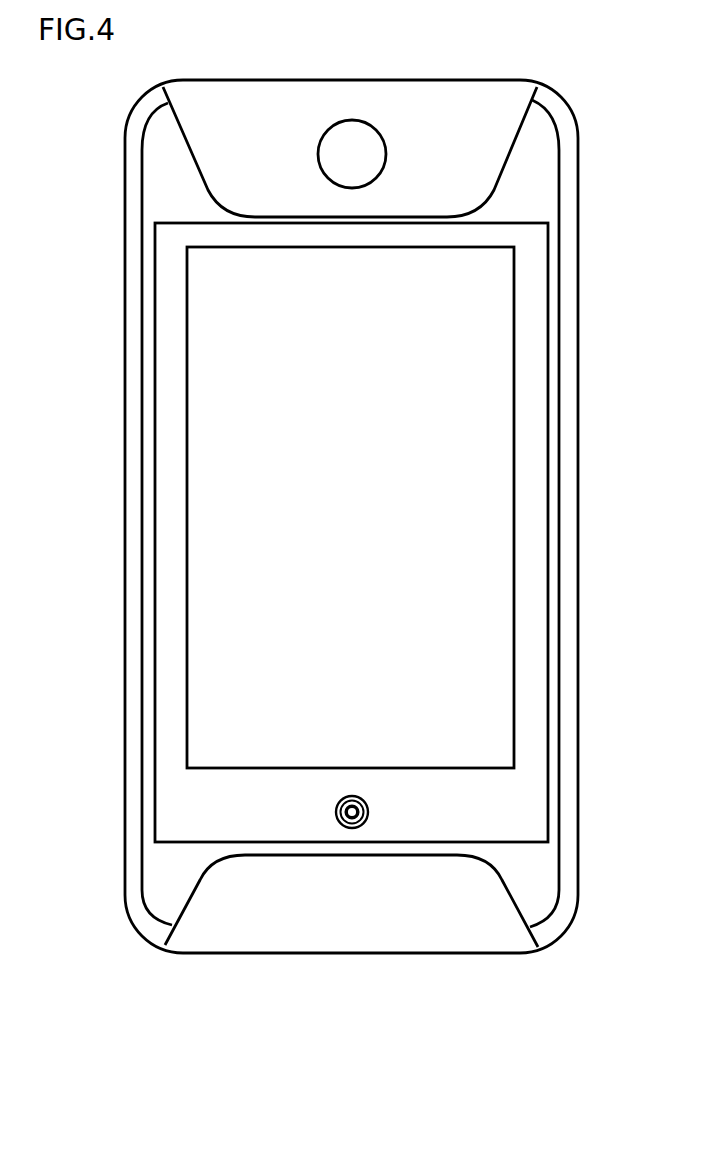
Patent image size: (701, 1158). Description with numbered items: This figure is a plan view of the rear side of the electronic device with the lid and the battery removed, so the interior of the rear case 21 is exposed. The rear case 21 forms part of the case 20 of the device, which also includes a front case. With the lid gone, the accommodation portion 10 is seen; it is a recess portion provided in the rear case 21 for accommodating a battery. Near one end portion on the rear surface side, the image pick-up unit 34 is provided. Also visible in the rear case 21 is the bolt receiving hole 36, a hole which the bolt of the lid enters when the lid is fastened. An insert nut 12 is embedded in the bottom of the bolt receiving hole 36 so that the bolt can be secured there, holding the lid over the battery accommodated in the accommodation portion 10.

The accommodation portion 10 is at (463, 468).
The insert nut 12 is at (333, 825).
The case 20 is at (351, 545).
The rear case 21 is at (447, 923).
The image pick-up unit 34 is at (352, 120).
The bolt receiving hole 36 is at (370, 813).